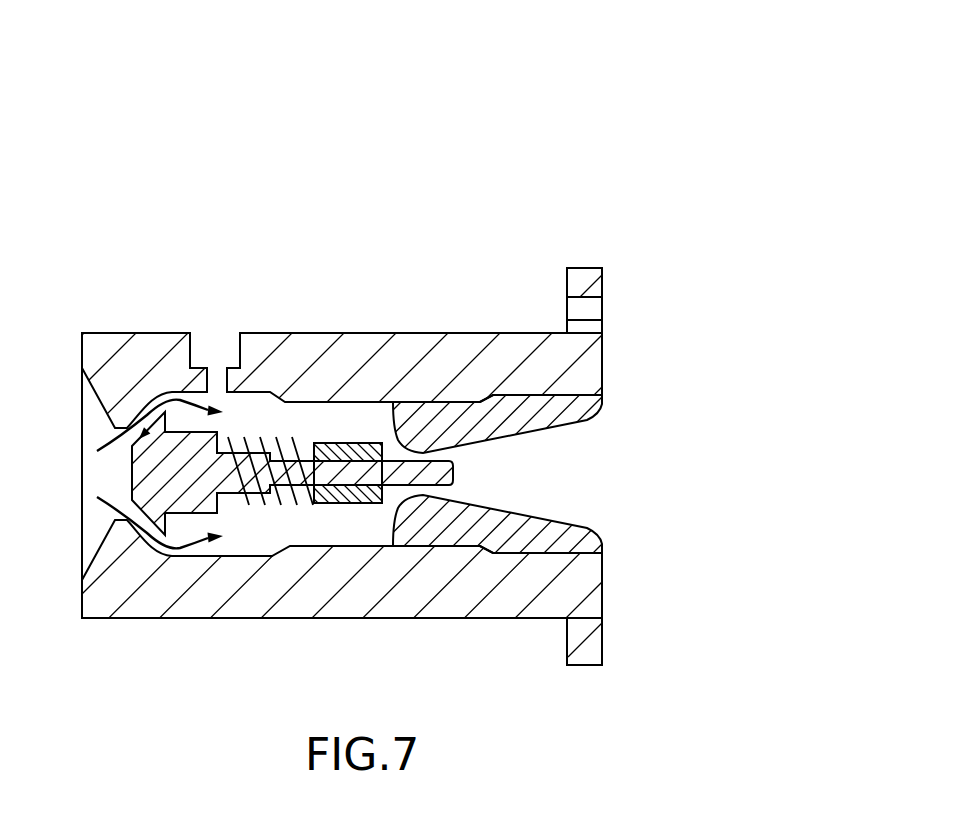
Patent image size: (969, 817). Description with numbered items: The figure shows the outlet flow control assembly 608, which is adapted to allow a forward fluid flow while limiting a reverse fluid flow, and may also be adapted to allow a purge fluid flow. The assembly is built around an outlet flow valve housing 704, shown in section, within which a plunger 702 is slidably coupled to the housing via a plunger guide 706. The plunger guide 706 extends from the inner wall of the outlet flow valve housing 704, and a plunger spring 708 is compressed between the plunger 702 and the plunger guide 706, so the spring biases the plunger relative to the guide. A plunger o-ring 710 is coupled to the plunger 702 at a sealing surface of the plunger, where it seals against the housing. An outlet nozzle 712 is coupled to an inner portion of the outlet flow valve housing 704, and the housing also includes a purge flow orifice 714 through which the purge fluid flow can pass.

The outlet flow control assembly 608 is at (532, 118).
The plunger 702 is at (165, 512).
The outlet flow valve housing 704 is at (400, 602).
The plunger guide 706 is at (357, 443).
The plunger spring 708 is at (262, 445).
The plunger o-ring 710 is at (137, 513).
The outlet nozzle 712 is at (587, 526).
The purge flow orifice 714 is at (215, 318).